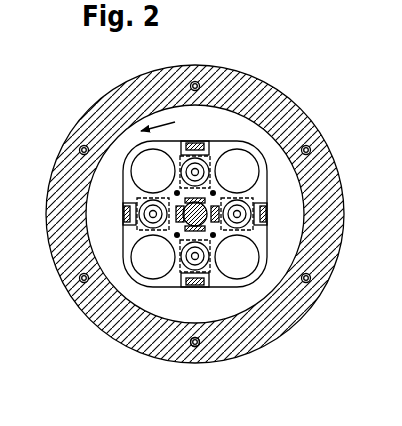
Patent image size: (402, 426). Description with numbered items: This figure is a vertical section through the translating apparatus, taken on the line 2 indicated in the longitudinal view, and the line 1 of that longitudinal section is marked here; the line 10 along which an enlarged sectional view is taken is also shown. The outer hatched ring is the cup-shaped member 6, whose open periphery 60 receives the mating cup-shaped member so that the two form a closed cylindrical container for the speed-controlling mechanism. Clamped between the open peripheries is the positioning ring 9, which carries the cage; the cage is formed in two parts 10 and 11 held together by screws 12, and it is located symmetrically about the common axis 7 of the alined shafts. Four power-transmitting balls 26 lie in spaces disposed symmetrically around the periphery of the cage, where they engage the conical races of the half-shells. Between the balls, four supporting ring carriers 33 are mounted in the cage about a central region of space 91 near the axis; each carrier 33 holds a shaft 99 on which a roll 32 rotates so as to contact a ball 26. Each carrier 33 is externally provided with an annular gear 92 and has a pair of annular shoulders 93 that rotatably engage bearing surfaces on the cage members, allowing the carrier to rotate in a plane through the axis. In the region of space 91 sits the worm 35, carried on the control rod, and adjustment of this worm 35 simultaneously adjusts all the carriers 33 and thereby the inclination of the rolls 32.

The end wall 1 is at (176, 35).
The end wall 2 is at (394, 50).
The cup-shaped member 6 is at (82, 303).
The common axis 7 is at (318, 178).
The positioning ring 9 is at (132, 303).
The cage part 10 is at (130, 174).
The cage part 11 is at (268, 270).
The screws 12 is at (250, 140).
The power-transmitting balls 26 is at (130, 150).
The roll 32 is at (150, 222).
The supporting ring carrier 33 is at (137, 215).
The worm 35 is at (138, 300).
The open periphery 60 is at (213, 325).
The region of space 91 is at (258, 232).
The annular gear 92 is at (190, 141).
The annular shoulders 93 is at (160, 146).
The shaft 99 is at (150, 157).